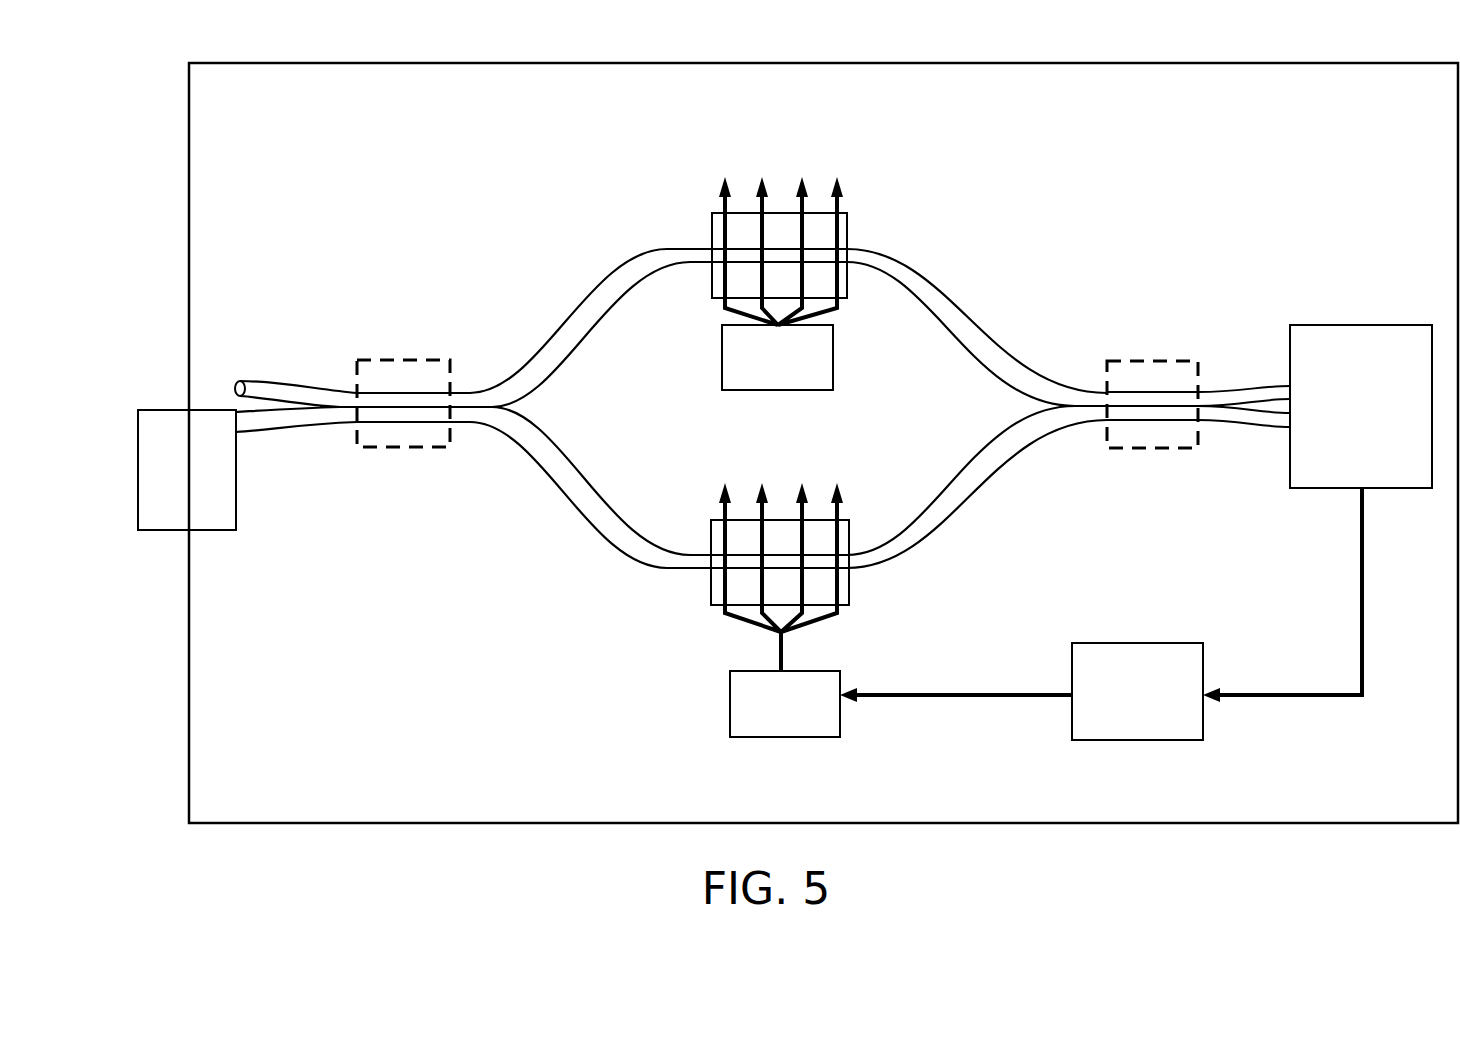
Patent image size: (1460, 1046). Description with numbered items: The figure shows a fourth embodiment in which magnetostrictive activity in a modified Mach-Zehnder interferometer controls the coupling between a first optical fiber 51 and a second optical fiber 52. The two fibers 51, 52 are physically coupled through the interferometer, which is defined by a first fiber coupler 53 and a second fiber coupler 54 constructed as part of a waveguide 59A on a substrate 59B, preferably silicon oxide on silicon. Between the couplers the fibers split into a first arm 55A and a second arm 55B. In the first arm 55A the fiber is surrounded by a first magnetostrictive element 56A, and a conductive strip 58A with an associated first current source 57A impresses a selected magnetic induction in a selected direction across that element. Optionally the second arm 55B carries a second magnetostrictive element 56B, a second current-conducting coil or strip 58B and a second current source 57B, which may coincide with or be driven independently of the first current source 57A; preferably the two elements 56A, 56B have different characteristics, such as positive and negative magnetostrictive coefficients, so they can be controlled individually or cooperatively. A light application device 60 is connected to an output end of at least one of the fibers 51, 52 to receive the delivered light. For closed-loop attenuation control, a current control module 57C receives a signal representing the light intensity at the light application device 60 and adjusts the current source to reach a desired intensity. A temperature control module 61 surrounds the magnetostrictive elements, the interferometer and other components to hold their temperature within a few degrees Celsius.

The first optical fiber 51 is at (257, 432).
The second optical fiber 52 is at (268, 382).
The first fiber coupler 53 is at (404, 438).
The second fiber coupler 54 is at (1152, 433).
The first arm 55A is at (648, 584).
The second arm 55B is at (612, 254).
The first magnetostrictive element 56A is at (718, 540).
The second magnetostrictive element 56B is at (718, 237).
The first current source 57A is at (832, 712).
The second current source 57B is at (828, 368).
The current control module 57C is at (1190, 732).
The conductive strip 58A is at (727, 612).
The second current-conducting coil or strip 58B is at (722, 308).
The waveguide 59A is at (1362, 147).
The substrate 59B is at (757, 161).
The light application device 60 is at (1357, 338).
The temperature control module 61 is at (1233, 63).